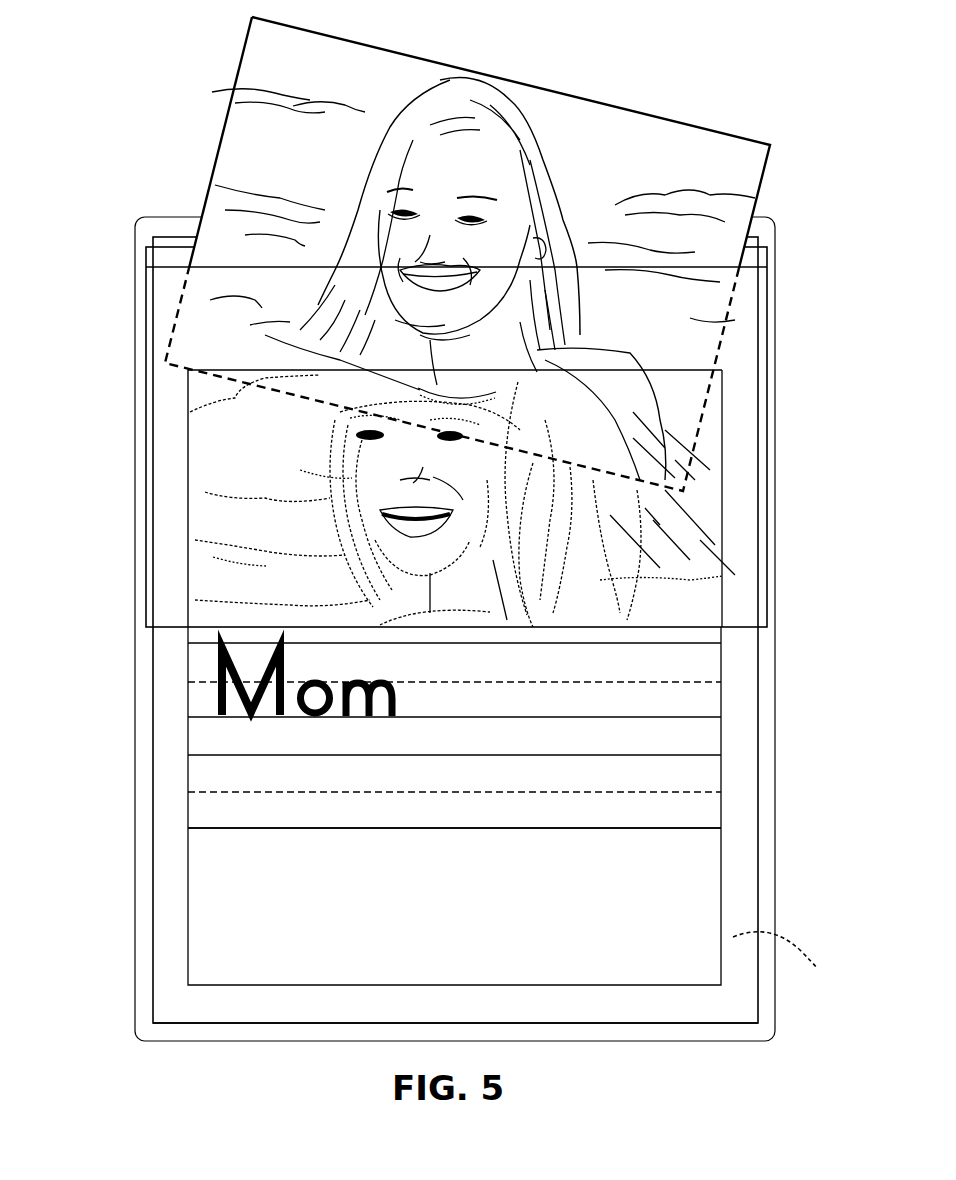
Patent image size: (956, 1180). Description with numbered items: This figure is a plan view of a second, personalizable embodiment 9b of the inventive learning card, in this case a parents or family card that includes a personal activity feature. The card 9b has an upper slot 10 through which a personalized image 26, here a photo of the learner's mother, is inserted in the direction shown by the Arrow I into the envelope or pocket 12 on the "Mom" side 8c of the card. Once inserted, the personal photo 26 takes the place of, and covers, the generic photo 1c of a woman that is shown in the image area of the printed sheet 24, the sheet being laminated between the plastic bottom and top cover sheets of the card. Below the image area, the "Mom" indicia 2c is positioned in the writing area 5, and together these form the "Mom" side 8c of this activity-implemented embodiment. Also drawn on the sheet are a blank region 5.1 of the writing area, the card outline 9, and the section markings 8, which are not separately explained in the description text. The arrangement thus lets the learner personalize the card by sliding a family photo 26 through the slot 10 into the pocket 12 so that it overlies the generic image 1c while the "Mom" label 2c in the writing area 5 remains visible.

The card body 9 is at (118, 539).
The section line 8- 8 is at (664, 87).
The personalizable embodiment of the learning card 9b is at (135, 305).
The upper slot 10 is at (748, 266).
The envelope or pocket 12 is at (740, 592).
The generic photo of the woman 1c is at (455, 498).
The writing area 5 is at (203, 700).
The "Mom" indicia 2c is at (210, 688).
The blank writing area 5.1 is at (454, 880).
The printed sheet 24 is at (790, 960).
The "Mom" side 8c is at (160, 968).
The personalized image 26 is at (235, 157).
The arrow I is at (775, 158).